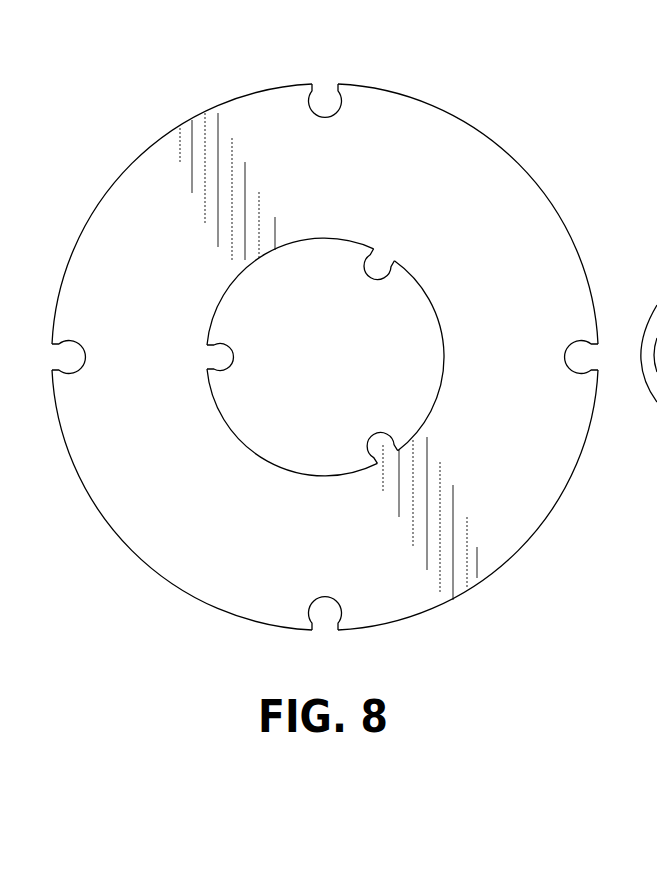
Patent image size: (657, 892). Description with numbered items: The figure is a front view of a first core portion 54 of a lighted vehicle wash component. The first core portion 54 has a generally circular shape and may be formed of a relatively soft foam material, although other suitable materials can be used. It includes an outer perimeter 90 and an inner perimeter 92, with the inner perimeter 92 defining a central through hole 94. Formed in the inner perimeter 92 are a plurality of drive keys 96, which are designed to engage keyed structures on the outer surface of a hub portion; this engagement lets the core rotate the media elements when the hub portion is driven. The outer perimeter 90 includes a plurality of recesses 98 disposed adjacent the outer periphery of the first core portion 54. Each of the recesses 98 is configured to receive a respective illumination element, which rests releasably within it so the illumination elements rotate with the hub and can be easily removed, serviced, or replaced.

The first core portion 54 is at (498, 100).
The outer perimeter 90 is at (548, 188).
The inner perimeter 92 is at (438, 320).
The through hole 94 is at (308, 365).
The drive keys 96 is at (376, 268).
The recesses 98 is at (598, 358).